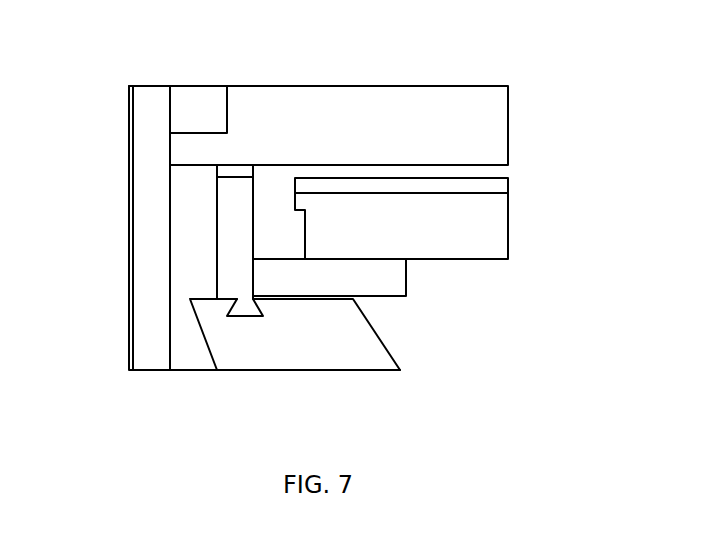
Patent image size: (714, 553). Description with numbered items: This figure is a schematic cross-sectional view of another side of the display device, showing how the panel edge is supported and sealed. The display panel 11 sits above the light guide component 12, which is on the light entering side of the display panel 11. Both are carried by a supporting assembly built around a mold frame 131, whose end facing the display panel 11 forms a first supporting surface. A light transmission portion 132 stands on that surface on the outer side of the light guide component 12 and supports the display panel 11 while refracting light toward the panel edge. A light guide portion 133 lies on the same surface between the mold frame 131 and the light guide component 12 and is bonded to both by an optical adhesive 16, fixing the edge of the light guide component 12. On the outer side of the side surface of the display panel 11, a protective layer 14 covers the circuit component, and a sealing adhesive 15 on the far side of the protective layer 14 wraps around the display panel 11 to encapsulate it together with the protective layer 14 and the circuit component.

The display panel 11 is at (361, 117).
The light guide component 12 is at (465, 232).
The protective layer 14 is at (146, 115).
The sealing adhesive 15 is at (128, 233).
The optical adhesive 16 is at (223, 166).
The mold frame 131 is at (282, 348).
The light transmission portion 132 is at (233, 261).
The light guide portion 133 is at (390, 298).